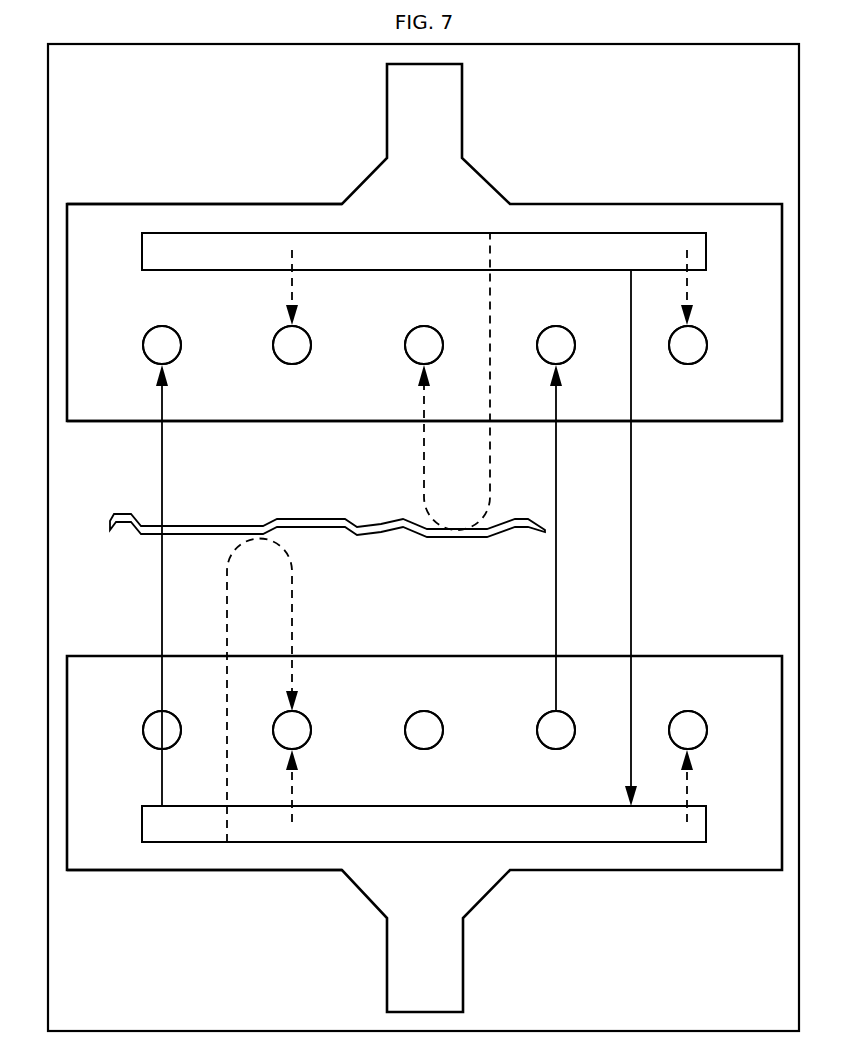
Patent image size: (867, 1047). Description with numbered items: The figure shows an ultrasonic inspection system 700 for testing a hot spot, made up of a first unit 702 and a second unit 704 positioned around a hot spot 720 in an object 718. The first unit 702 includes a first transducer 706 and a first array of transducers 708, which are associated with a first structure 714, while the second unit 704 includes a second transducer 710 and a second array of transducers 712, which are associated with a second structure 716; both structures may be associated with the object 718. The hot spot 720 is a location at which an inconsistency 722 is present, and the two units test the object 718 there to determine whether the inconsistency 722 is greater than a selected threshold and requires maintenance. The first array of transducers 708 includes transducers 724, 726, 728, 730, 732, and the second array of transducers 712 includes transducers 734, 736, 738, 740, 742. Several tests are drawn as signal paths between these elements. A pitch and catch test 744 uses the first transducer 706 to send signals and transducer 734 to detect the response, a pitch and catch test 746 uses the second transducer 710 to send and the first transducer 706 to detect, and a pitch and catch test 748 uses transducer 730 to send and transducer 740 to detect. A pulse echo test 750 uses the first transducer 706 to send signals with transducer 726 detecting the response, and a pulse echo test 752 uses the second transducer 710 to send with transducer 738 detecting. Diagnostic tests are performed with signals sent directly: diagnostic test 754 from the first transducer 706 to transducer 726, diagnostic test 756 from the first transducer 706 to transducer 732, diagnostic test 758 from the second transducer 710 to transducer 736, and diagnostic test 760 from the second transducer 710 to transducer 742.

The ultrasonic inspection system 700 is at (604, 124).
The first unit 702 is at (742, 858).
The second unit 704 is at (740, 220).
The first transducer 706 is at (428, 845).
The first array of transducers 708 is at (134, 710).
The second transducer 710 is at (428, 240).
The second array of transducers 712 is at (132, 325).
The first structure 714 is at (280, 880).
The second structure 716 is at (280, 196).
The object 718 is at (728, 502).
The hot spot 720 is at (298, 500).
The inconsistency 722 is at (458, 540).
The transducer 724 is at (152, 747).
The transducer 726 is at (277, 742).
The transducer 728 is at (410, 742).
The transducer 730 is at (572, 742).
The transducer 732 is at (697, 712).
The transducer 734 is at (150, 328).
The transducer 736 is at (276, 357).
The transducer 738 is at (440, 333).
The transducer 740 is at (572, 333).
The transducer 742 is at (698, 361).
The pitch and catch test 744 is at (159, 468).
The pitch and catch test 746 is at (632, 530).
The pitch and catch test 748 is at (557, 540).
The pulse echo test 750 is at (294, 590).
The pulse echo test 752 is at (422, 470).
The diagnostic test 754 is at (294, 794).
The diagnostic test 756 is at (689, 794).
The diagnostic test 758 is at (290, 285).
The diagnostic test 760 is at (688, 285).